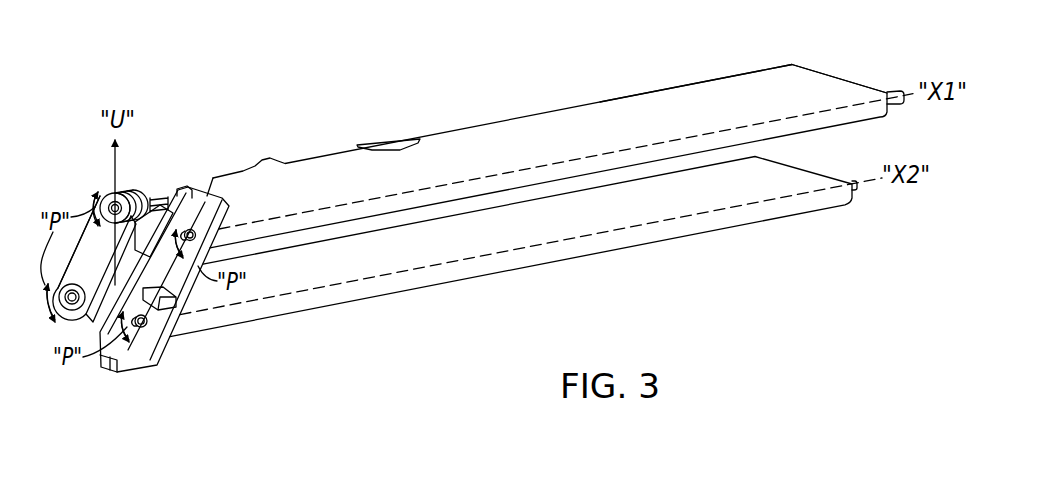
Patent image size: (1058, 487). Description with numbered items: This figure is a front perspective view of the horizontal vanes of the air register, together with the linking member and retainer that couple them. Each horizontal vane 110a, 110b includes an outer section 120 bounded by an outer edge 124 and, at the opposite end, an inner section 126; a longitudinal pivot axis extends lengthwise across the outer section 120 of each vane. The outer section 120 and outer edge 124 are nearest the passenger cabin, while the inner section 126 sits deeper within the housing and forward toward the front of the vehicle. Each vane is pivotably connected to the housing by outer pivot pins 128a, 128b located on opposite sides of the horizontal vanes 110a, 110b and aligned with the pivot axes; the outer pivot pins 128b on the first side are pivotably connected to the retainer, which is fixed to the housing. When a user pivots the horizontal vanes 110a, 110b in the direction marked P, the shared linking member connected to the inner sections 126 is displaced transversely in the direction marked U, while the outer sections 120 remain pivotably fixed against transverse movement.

The upper horizontal vane 110a is at (472, 143).
The horizontal vane 110b is at (483, 237).
The outer section 120 is at (847, 95).
The outer edge 124 is at (800, 124).
The inner section 126 is at (712, 92).
The outer pivot pin 128a is at (894, 90).
The outer pivot pin 128b is at (203, 200).